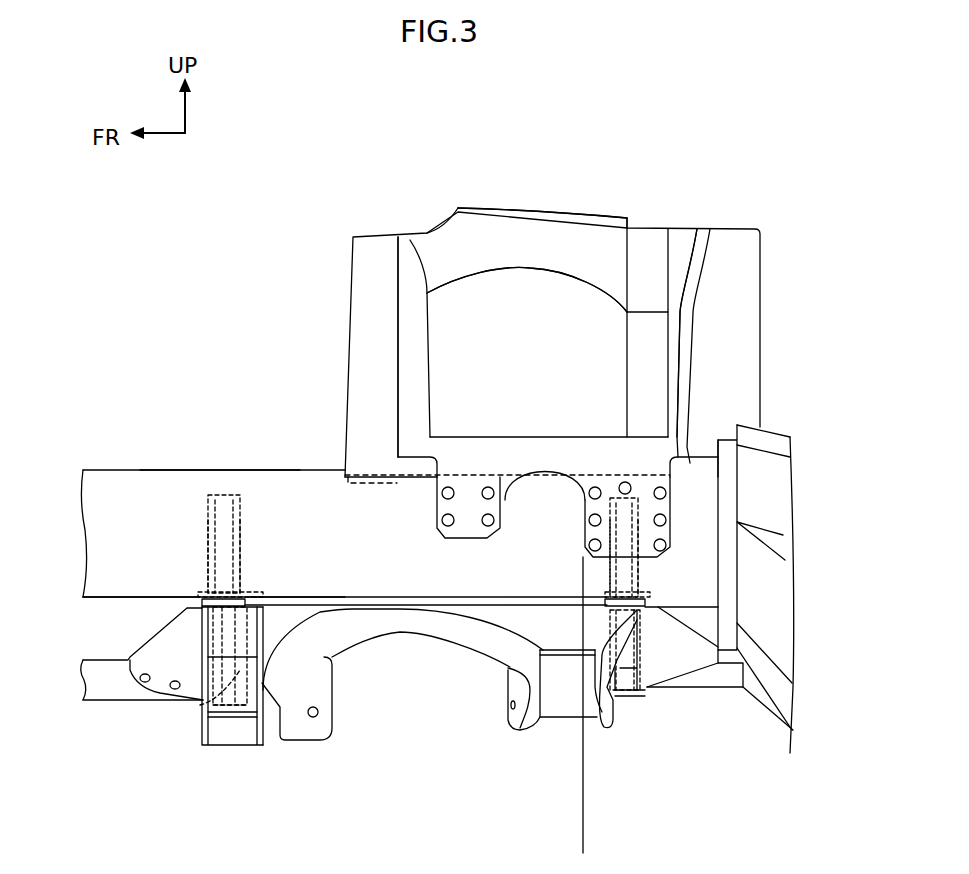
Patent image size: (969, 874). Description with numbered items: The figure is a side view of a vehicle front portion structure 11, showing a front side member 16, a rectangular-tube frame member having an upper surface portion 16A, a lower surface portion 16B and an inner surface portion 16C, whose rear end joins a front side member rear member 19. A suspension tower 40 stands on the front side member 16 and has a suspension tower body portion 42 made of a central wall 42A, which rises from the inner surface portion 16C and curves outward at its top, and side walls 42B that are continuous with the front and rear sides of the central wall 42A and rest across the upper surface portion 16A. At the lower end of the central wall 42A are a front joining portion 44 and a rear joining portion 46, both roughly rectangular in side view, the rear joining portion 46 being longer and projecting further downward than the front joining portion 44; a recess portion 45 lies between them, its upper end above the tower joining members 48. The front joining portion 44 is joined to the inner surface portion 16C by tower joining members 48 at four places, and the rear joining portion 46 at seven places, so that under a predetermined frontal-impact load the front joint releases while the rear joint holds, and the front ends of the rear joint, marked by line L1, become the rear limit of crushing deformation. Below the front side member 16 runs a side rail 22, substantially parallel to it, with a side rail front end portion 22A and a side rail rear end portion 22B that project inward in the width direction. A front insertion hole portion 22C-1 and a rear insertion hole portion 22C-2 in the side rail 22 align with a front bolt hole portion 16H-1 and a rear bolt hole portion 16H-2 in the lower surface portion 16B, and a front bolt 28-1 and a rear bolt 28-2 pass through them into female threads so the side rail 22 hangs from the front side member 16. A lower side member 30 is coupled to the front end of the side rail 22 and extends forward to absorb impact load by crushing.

The vehicle front portion structure 11 is at (277, 142).
The suspension tower 40 is at (400, 190).
The suspension tower body portion 42 is at (493, 203).
The central wall 42A is at (553, 320).
The side wall 42B is at (410, 328).
The recess portion 45 is at (533, 471).
The front side member 16 is at (128, 462).
The upper surface portion 16A is at (215, 470).
The lower surface portion 16B is at (140, 600).
The inner surface portion 16C is at (297, 517).
The front bolt hole portion 16H-1 is at (208, 574).
The rear bolt hole portion 16H-2 is at (635, 583).
The front bolt 28-1 is at (208, 540).
The rear bolt 28-2 is at (635, 567).
The front joining portion 44 is at (437, 497).
The rear joining portion 46 is at (585, 537).
The tower joining member 48 is at (485, 500).
The front side member rear member 19 is at (775, 632).
The lower side member 30 is at (110, 700).
The side rail 22 is at (415, 642).
The side rail front end portion 22A is at (248, 730).
The side rail rear end portion 22B is at (508, 722).
The front insertion hole portion 22C-1 is at (218, 747).
The rear insertion hole portion 22C-2 is at (627, 680).
The line L1 is at (583, 833).